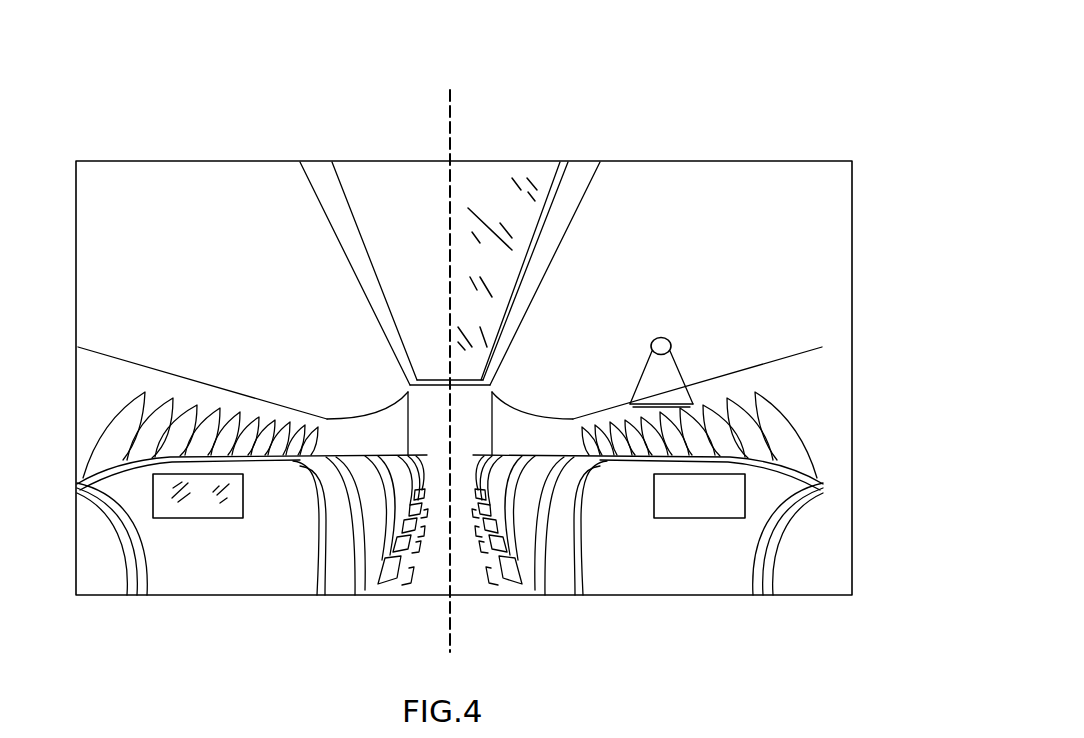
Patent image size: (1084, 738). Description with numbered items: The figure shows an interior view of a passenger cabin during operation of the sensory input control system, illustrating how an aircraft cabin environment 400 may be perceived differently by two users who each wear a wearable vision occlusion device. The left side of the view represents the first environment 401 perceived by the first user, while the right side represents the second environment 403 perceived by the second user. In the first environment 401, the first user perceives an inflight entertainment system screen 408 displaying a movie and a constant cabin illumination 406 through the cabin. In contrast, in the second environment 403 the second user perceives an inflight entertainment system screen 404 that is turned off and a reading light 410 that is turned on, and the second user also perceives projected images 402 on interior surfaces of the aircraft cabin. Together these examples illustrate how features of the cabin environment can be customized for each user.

The aircraft cabin environment 400 is at (733, 67).
The first environment 401 is at (243, 117).
The projected images 402 is at (502, 178).
The second environment 403 is at (746, 129).
The inflight entertainment system screen 404 is at (670, 494).
The constant cabin illumination 406 is at (397, 192).
The inflight entertainment system screen 408 is at (213, 502).
The reading light 410 is at (668, 377).